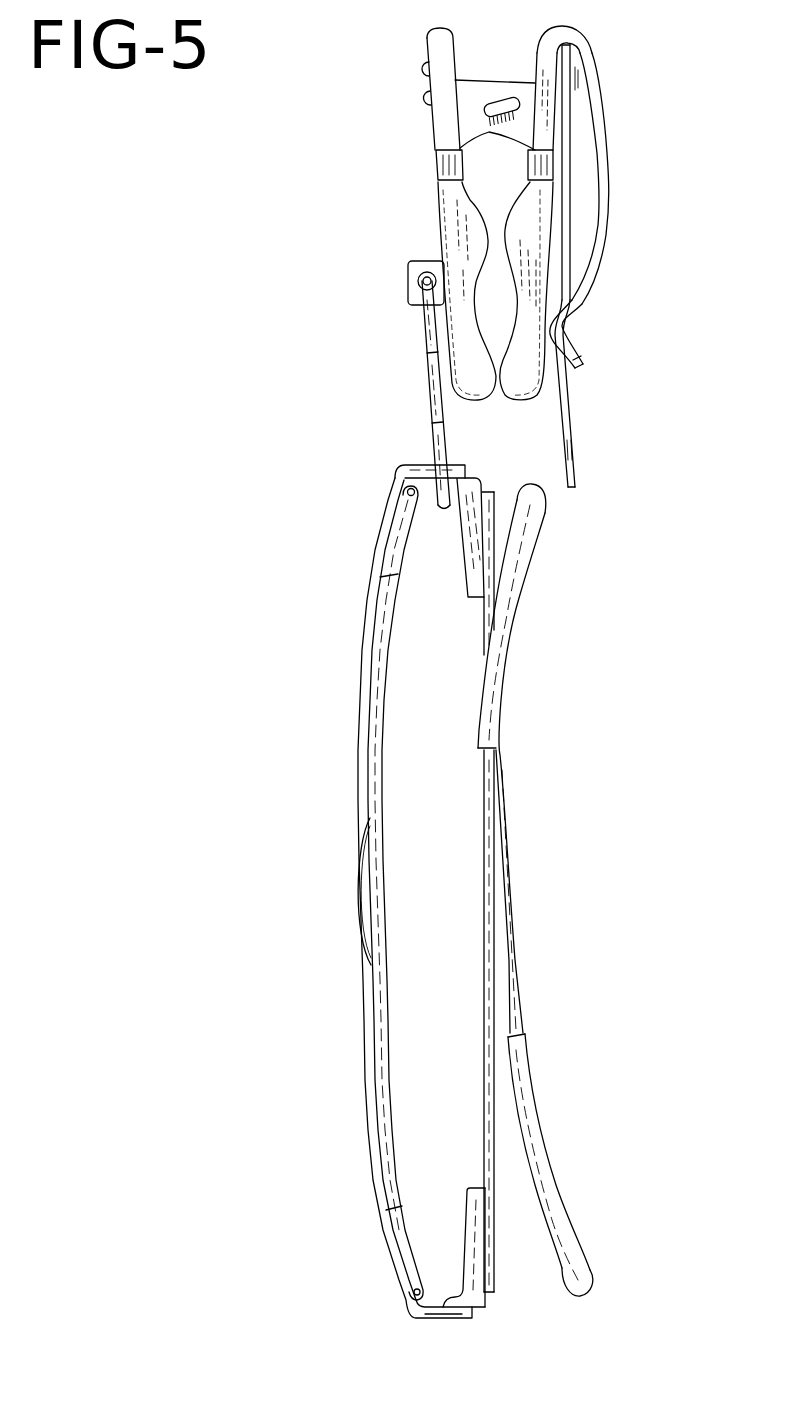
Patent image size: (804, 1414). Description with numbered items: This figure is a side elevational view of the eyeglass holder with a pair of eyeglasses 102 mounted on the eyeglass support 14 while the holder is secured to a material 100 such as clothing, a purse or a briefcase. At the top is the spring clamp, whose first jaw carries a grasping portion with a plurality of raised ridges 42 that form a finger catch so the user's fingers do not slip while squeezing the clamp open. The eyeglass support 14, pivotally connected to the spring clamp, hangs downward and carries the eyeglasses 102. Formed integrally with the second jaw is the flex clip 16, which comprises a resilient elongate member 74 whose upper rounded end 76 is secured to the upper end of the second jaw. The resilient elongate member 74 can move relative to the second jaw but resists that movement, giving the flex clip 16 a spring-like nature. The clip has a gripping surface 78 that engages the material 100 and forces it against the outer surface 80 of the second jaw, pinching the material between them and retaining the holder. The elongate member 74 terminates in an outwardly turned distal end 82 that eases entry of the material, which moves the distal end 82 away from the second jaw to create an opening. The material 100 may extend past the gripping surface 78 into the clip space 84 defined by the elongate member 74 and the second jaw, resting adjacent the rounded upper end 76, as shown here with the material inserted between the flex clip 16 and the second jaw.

The eyeglass support 14 is at (436, 444).
The flex clip 16 is at (598, 82).
The raised ridges 42 is at (422, 101).
The resilient elongate member 74 is at (607, 190).
The upper rounded end 76 is at (572, 30).
The gripping surface 78 is at (572, 340).
The outer surface of second jaw 80 is at (550, 266).
The outwardly turned distal end 82 is at (581, 367).
The clip space 84 is at (585, 125).
The material 100 is at (568, 445).
The pair of eyeglasses 102 is at (362, 747).